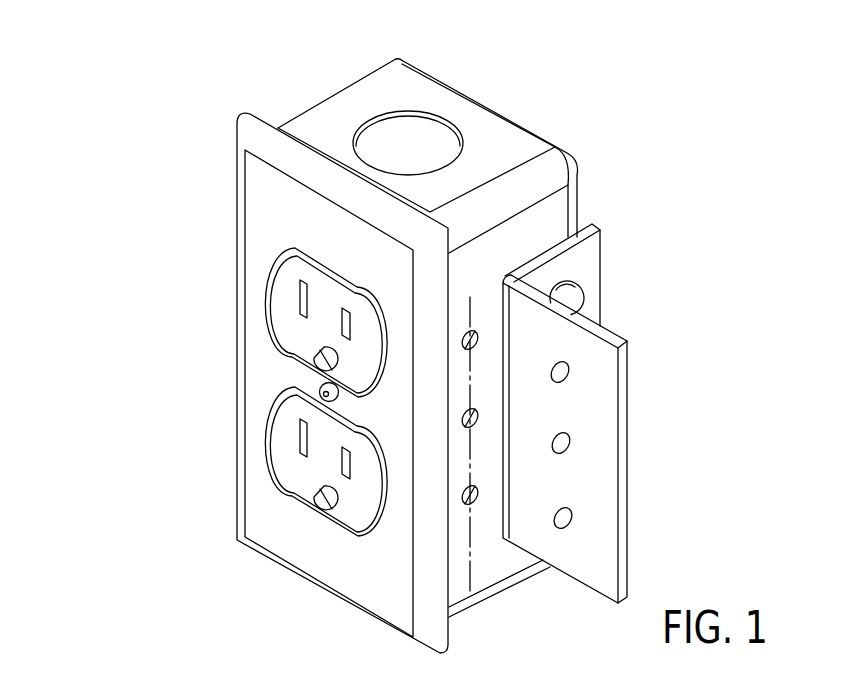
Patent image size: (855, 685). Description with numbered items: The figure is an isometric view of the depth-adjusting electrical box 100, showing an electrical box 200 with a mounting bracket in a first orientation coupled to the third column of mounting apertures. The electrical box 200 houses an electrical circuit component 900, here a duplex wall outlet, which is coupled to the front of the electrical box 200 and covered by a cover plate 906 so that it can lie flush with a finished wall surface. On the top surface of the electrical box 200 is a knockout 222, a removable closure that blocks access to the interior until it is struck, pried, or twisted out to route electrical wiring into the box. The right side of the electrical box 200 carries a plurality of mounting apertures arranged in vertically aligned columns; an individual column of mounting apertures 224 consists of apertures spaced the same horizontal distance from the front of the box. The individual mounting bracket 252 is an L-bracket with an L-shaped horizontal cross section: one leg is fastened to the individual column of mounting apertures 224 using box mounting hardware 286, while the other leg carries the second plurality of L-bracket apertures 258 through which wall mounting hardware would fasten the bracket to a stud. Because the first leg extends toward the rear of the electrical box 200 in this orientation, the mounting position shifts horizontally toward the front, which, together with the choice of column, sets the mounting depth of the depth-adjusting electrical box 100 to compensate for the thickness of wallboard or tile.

The depth-adjusting electrical box 100 is at (143, 128).
The electrical box 200 is at (565, 150).
The knockout 222 is at (443, 128).
The individual column of mounting apertures 224 is at (487, 595).
The individual mounting bracket 252 is at (598, 536).
The second plurality of L-bracket apertures 258 is at (575, 517).
The box mounting hardware 286 is at (573, 290).
The electrical circuit component 900 is at (285, 478).
The cover plate 906 is at (284, 560).